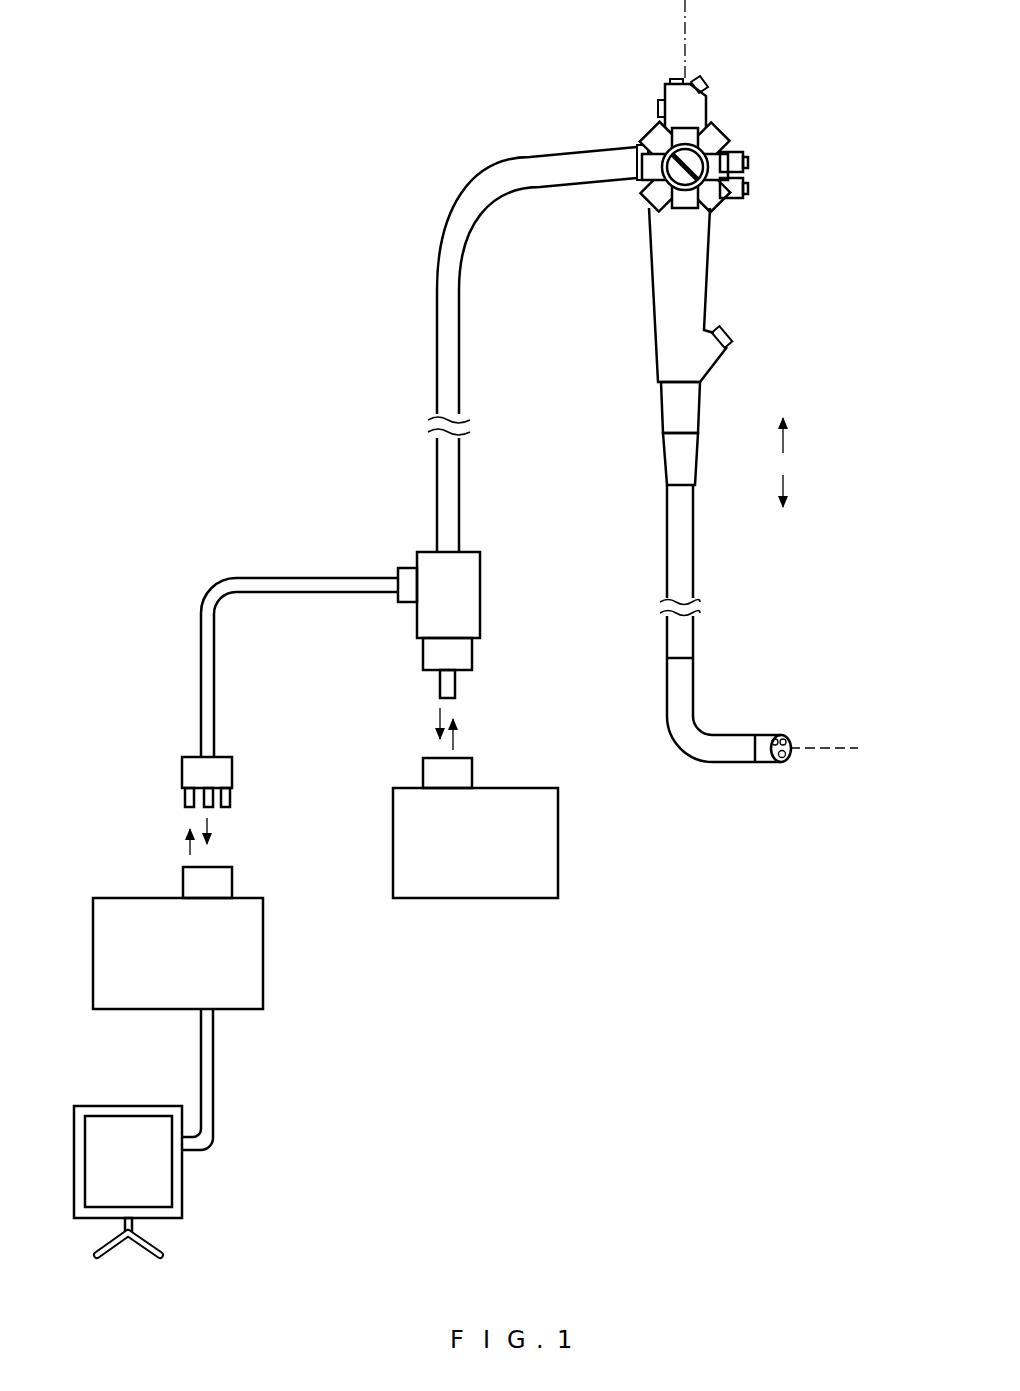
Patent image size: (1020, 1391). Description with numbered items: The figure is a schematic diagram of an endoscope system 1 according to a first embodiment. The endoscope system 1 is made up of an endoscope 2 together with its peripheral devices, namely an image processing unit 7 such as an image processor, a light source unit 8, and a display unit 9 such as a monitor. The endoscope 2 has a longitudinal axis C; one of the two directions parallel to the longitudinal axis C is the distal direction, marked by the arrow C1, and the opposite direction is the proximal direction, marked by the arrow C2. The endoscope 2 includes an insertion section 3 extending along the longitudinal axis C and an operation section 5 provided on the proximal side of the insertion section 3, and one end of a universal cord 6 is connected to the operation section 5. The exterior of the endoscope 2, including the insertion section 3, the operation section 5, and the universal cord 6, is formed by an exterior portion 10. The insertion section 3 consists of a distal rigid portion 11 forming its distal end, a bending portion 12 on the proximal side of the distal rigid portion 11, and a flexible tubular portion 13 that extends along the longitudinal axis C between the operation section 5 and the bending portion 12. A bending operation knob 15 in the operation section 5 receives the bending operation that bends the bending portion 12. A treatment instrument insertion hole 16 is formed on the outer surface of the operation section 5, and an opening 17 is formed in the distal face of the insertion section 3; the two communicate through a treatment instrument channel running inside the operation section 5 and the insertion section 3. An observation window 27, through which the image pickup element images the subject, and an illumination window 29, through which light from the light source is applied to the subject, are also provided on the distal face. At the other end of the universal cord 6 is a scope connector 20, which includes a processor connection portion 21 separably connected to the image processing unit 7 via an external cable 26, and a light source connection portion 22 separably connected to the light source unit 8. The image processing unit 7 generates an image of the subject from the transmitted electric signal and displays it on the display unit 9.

The endoscope system 1 is at (407, 51).
The endoscope 2 is at (815, 241).
The insertion section 3 is at (662, 534).
The operation section 5 is at (708, 257).
The universal cord 6 is at (468, 203).
The image processing unit 7 is at (256, 958).
The light source unit 8 is at (504, 891).
The display unit 9 is at (168, 1188).
The exterior portion 10 is at (666, 301).
The distal rigid portion 11 is at (764, 737).
The bending portion 12 is at (687, 745).
The flexible tubular portion 13 is at (670, 577).
The bending operation knob 15 is at (680, 207).
The treatment instrument insertion hole 16 is at (731, 337).
The opening 17 is at (789, 755).
The scope connector 20 is at (477, 595).
The processor connection portion 21 is at (405, 568).
The light source connection portion 22 is at (469, 657).
The external cable 26 is at (279, 576).
The observation window 27 is at (788, 741).
The illumination window 29 is at (764, 763).
The longitudinal axis C is at (687, 14).
The arrow C1 is at (805, 491).
The arrow C2 is at (805, 437).